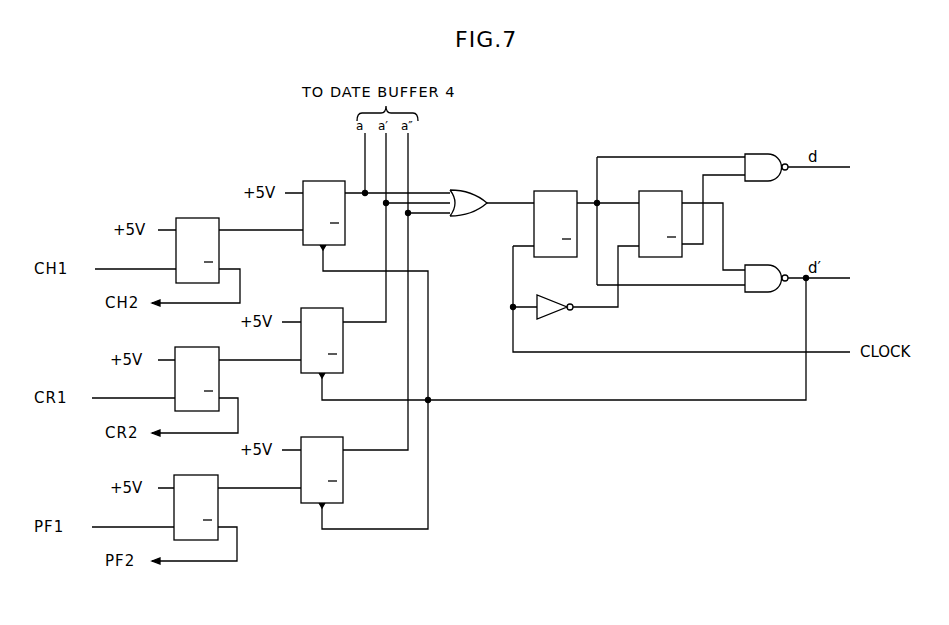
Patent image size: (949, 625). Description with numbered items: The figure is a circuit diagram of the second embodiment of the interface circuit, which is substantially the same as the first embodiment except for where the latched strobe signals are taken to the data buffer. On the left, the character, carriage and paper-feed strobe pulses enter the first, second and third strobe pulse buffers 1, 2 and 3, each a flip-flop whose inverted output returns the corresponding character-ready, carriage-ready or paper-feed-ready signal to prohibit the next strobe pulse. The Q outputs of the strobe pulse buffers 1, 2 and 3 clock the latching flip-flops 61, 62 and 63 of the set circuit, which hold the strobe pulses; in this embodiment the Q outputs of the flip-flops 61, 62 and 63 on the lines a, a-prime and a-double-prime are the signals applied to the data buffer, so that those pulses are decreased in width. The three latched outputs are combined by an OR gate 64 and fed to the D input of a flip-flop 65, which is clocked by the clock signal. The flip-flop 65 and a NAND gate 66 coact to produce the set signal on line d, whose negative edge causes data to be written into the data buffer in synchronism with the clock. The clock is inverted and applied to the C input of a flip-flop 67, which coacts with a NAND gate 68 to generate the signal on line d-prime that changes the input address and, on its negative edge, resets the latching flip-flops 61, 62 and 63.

The first strobe pulse buffer 1 is at (191, 218).
The second strobe pulse buffer 2 is at (190, 347).
The third strobe pulse buffer 3 is at (189, 475).
The flip-flop 61 is at (322, 181).
The flip-flop 62 is at (320, 308).
The flip-flop 63 is at (318, 437).
The OR gate 64 is at (468, 192).
The flip-flop 65 is at (551, 191).
The NAND gate 66 is at (760, 154).
The flip-flop 67 is at (653, 191).
The NAND gate 68 is at (755, 265).